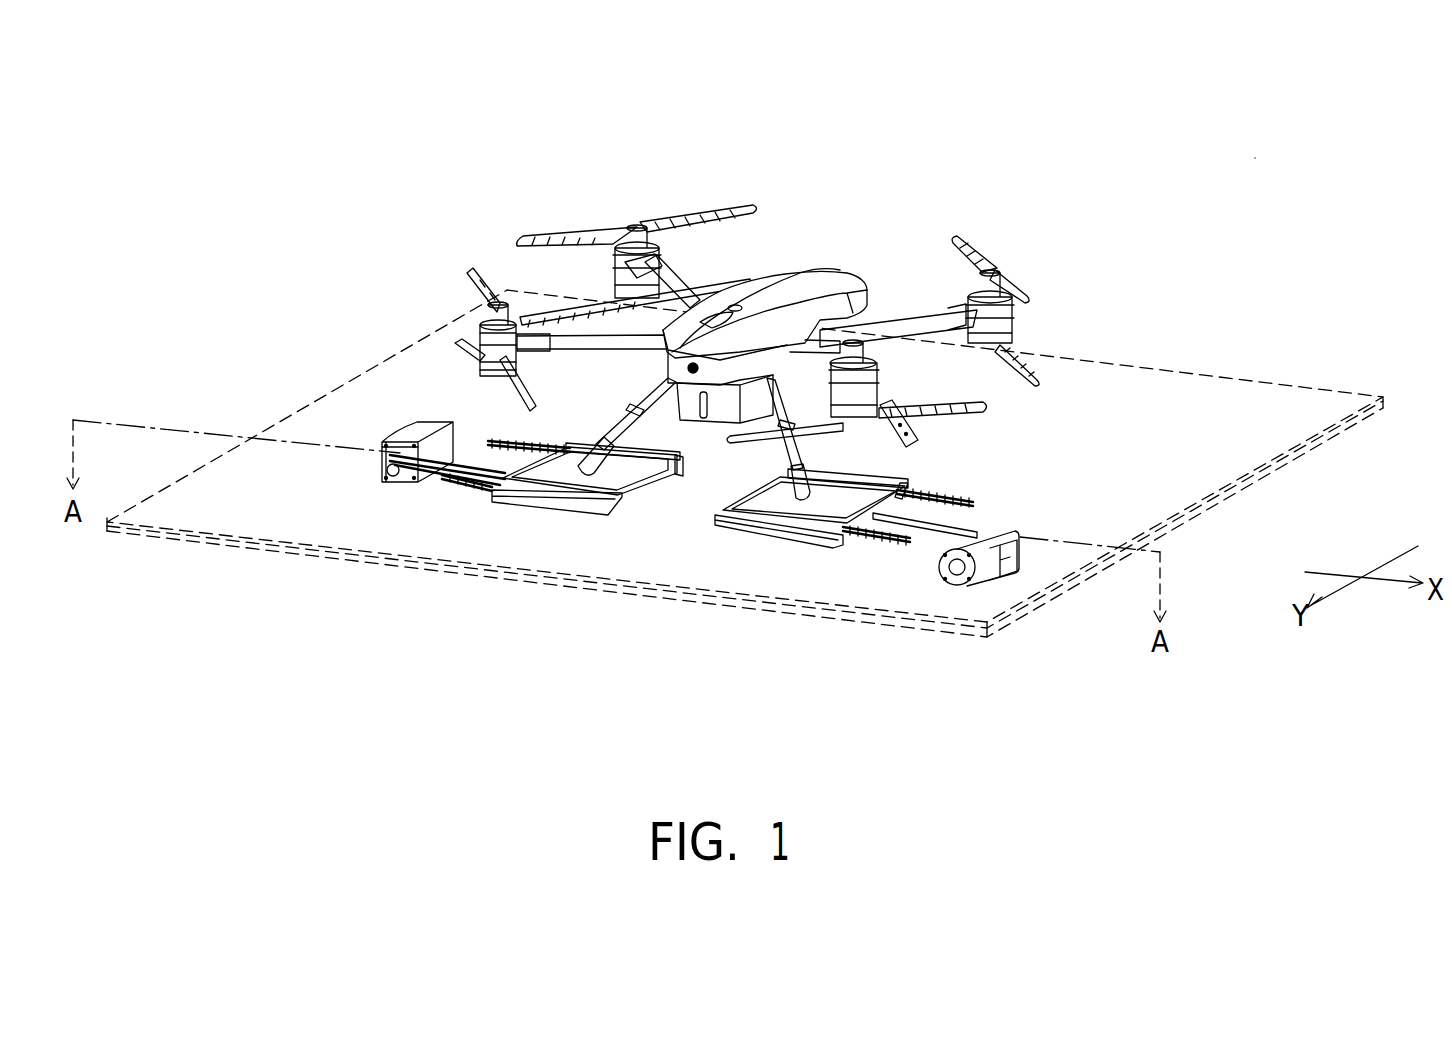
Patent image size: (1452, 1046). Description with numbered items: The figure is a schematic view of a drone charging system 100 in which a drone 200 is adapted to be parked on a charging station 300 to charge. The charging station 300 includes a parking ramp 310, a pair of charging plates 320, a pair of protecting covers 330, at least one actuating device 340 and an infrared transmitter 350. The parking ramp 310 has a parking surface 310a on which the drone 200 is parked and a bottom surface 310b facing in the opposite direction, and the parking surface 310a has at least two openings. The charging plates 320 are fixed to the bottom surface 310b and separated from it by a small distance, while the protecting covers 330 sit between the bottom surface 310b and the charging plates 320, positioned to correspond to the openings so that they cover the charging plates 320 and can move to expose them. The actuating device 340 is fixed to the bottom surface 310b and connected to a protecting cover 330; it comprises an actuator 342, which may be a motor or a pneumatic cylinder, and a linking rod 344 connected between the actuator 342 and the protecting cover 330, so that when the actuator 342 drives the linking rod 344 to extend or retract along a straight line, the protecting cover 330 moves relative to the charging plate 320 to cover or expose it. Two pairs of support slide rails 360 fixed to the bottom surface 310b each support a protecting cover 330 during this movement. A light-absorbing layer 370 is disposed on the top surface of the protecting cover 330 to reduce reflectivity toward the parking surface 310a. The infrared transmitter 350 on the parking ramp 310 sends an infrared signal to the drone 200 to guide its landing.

The drone charging system 100 is at (1268, 152).
The drone 200 is at (830, 273).
The charging station 300 is at (1141, 336).
The parking ramp 310 is at (229, 72).
The parking surface 310a is at (433, 345).
The bottom surface 310b is at (250, 608).
The charging plate 320 is at (855, 525).
The protecting cover 330 is at (753, 493).
The actuating device 340 is at (988, 687).
The actuator 342 is at (967, 562).
The linking rod 344 is at (958, 500).
The infrared transmitter 350 is at (783, 447).
The support slide rail 360 is at (887, 520).
The light-absorbing layer 370 is at (704, 485).